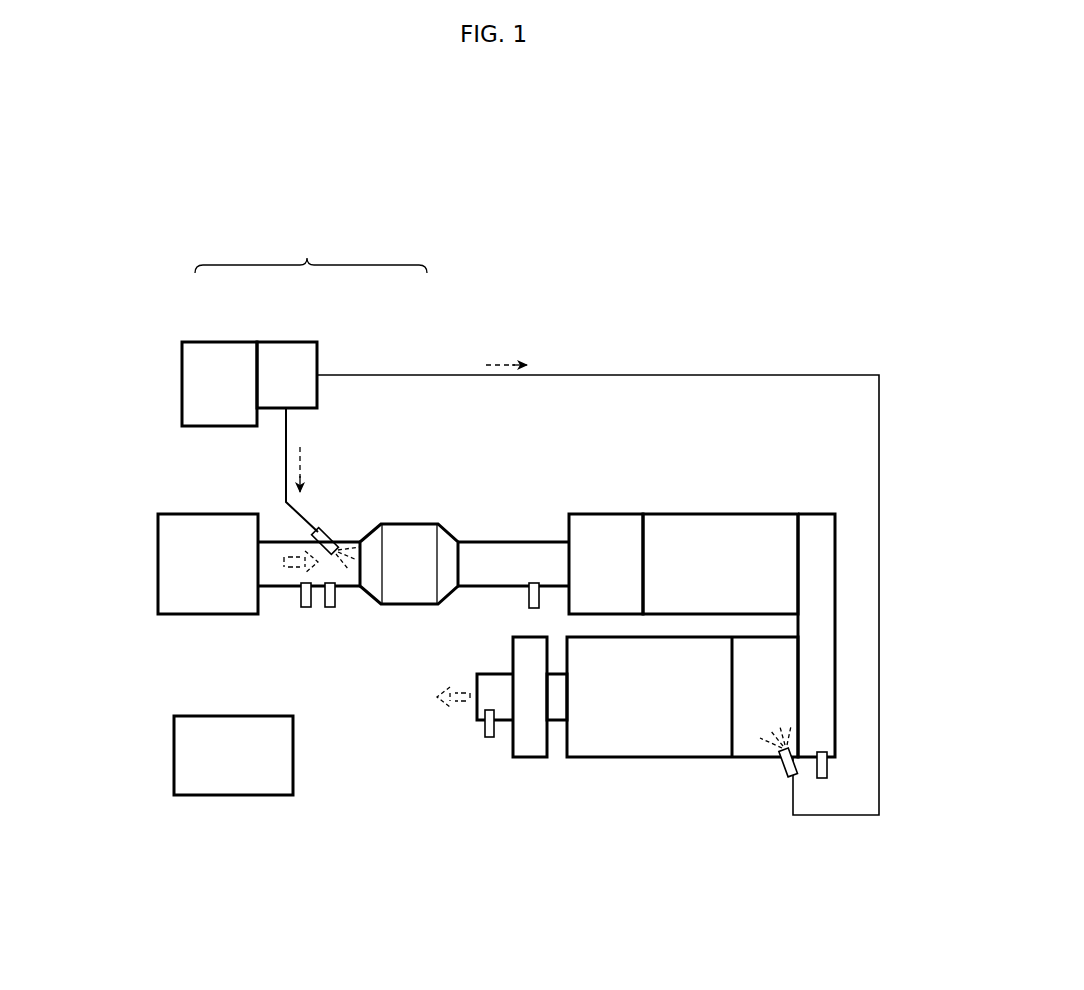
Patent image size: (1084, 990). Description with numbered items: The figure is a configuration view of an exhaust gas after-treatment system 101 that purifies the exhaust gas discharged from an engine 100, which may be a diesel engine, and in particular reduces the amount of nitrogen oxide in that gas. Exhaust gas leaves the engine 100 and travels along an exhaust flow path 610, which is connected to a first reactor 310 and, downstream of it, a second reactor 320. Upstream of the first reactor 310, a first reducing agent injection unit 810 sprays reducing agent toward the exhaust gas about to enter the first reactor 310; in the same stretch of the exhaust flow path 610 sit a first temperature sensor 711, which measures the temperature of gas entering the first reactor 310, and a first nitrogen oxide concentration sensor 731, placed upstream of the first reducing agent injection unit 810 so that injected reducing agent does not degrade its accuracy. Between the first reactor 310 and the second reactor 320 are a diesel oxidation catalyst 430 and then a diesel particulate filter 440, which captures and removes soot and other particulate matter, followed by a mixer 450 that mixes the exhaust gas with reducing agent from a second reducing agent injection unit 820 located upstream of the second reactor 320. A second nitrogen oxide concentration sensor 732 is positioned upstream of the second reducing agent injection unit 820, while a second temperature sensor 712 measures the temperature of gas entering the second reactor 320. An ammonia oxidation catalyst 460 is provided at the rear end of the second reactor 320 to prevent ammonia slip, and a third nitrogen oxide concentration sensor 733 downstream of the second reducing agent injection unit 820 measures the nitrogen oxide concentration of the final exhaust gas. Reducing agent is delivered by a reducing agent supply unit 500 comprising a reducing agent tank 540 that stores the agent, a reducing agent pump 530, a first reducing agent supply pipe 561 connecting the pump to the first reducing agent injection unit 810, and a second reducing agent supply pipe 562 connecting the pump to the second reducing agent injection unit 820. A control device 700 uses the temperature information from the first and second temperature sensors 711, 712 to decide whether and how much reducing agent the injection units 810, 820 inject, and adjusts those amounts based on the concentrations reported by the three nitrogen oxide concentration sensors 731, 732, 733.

The exhaust gas after-treatment system 101 is at (463, 262).
The engine 100 is at (176, 510).
The first reactor 310 is at (418, 520).
The second reactor 320 is at (602, 762).
The diesel oxidation catalyst 430 is at (606, 510).
The diesel particulate filter 440 is at (725, 510).
The mixer 450 is at (745, 760).
The ammonia oxidation catalyst 460 is at (530, 762).
The reducing agent supply unit 500 is at (311, 252).
The reducing agent pump 530 is at (275, 337).
The reducing agent tank 540 is at (213, 337).
The first reducing agent supply pipe 561 is at (292, 430).
The second reducing agent supply pipe 562 is at (398, 372).
The exhaust flow path 610 is at (514, 538).
The control device 700 is at (256, 800).
The first temperature sensor 711 is at (304, 612).
The second temperature sensor 712 is at (827, 782).
The first nitrogen oxide concentration sensor 731 is at (331, 612).
The second nitrogen oxide concentration sensor 732 is at (523, 596).
The third nitrogen oxide concentration sensor 733 is at (481, 742).
The first reducing agent injection unit 810 is at (334, 518).
The second reducing agent injection unit 820 is at (782, 783).